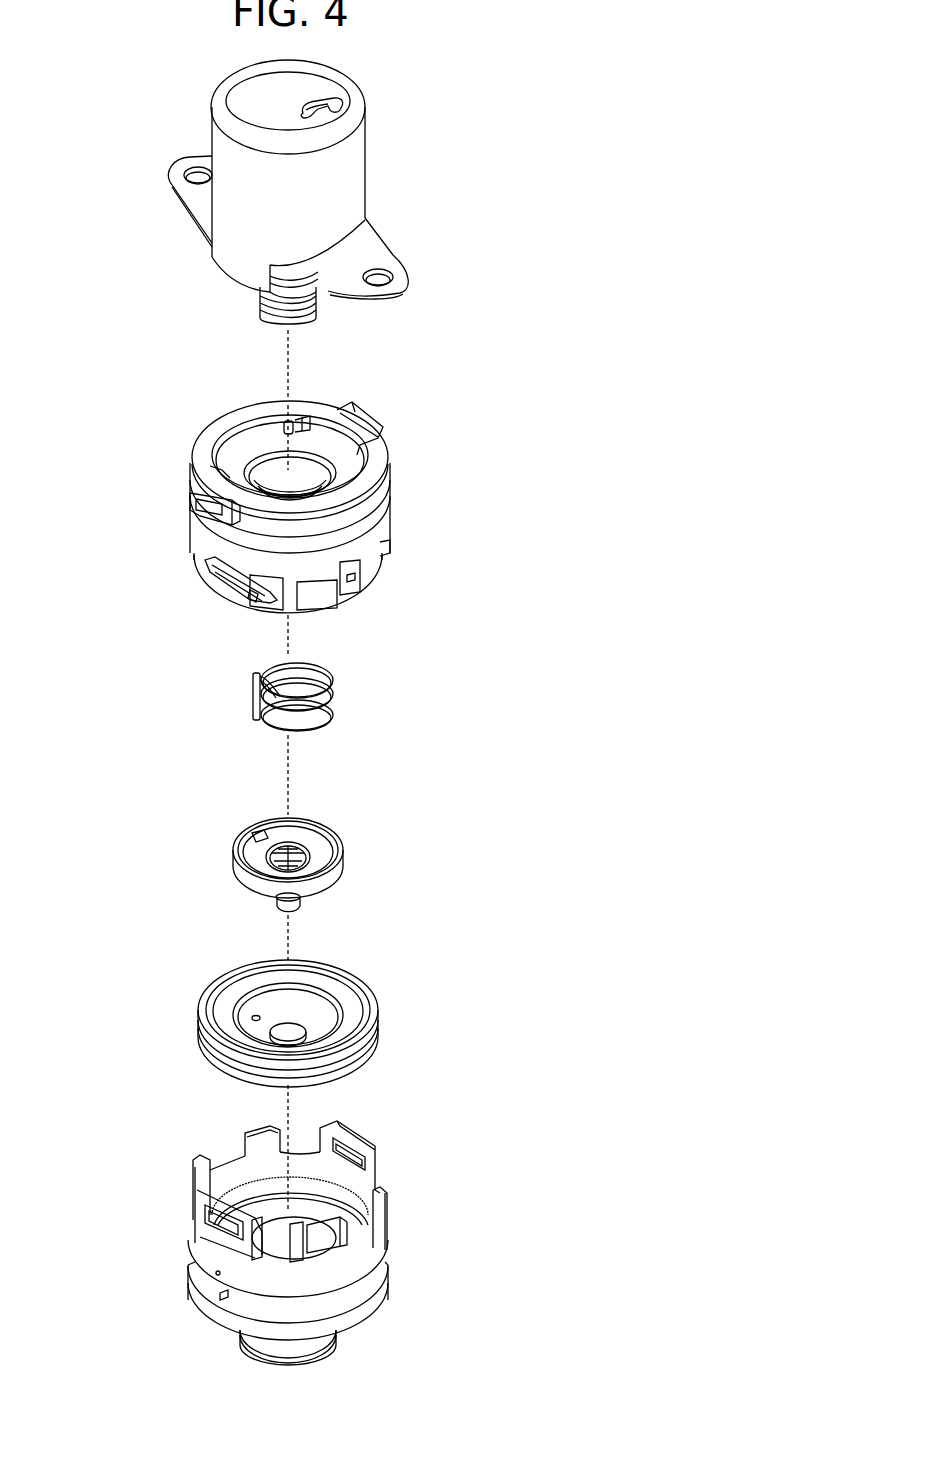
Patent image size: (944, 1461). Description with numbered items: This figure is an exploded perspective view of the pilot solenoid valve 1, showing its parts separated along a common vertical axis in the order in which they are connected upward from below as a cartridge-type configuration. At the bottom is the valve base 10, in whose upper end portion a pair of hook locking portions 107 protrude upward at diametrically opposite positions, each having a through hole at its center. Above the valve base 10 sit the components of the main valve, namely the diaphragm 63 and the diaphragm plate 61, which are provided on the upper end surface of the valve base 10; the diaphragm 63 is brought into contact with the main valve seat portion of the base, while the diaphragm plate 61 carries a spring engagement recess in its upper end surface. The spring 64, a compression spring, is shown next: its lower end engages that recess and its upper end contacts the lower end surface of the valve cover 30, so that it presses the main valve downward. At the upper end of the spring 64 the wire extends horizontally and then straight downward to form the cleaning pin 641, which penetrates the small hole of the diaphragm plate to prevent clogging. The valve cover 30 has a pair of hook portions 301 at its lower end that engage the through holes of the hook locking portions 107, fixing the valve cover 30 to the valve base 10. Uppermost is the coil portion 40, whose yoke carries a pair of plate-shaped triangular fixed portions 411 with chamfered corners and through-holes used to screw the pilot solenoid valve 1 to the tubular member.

The pilot solenoid valve 1 is at (592, 88).
The coil portion 40 is at (345, 191).
The fixed portion 411 is at (397, 260).
The valve cover 30 is at (296, 507).
The hook portion 301 is at (217, 585).
The spring 64 is at (279, 692).
The cleaning pin 641 is at (252, 710).
The diaphragm plate 61 is at (343, 853).
The diaphragm 63 is at (373, 1032).
The valve base 10 is at (323, 1243).
The hook locking portion 107 is at (365, 1138).